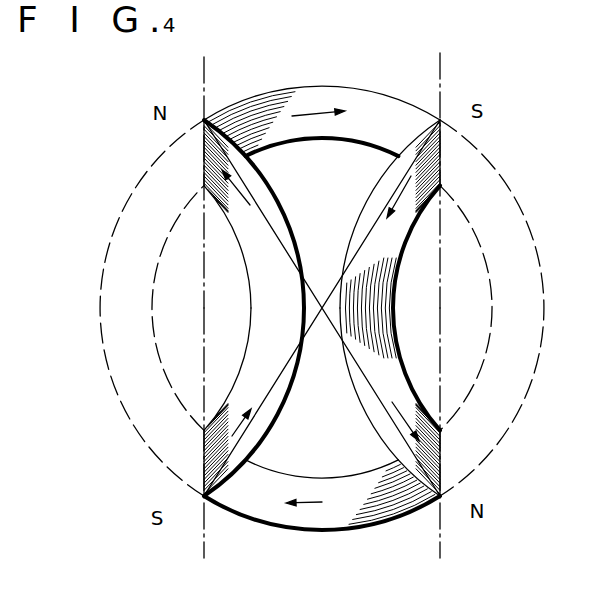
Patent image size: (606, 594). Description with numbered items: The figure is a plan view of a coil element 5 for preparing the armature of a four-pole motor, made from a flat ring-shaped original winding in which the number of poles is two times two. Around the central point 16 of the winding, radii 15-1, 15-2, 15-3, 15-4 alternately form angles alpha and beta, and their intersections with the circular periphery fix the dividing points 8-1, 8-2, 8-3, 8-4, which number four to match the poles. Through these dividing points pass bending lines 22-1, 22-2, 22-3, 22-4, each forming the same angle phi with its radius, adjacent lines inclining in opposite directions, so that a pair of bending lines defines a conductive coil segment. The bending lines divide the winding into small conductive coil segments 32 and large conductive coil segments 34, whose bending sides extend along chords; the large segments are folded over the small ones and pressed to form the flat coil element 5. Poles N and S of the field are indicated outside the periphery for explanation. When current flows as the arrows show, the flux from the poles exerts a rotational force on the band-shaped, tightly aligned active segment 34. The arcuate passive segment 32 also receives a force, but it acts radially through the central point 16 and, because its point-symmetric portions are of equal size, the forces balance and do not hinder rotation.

The coil element 5 is at (358, 88).
The conductive coil segment 32 is at (392, 111).
The conductive coil segment 34 is at (380, 300).
The central point 16 is at (324, 301).
The radius 15-1 is at (367, 233).
The radius 15-2 is at (269, 222).
The radius 15-3 is at (283, 361).
The radius 15-4 is at (373, 372).
The dividing point 8-1 is at (442, 185).
The dividing point 8-2 is at (204, 186).
The dividing point 8-3 is at (206, 498).
The dividing point 8-4 is at (442, 498).
The bending line 22-1 is at (442, 71).
The bending line 22-2 is at (204, 72).
The bending line 22-3 is at (211, 546).
The bending line 22-4 is at (441, 550).